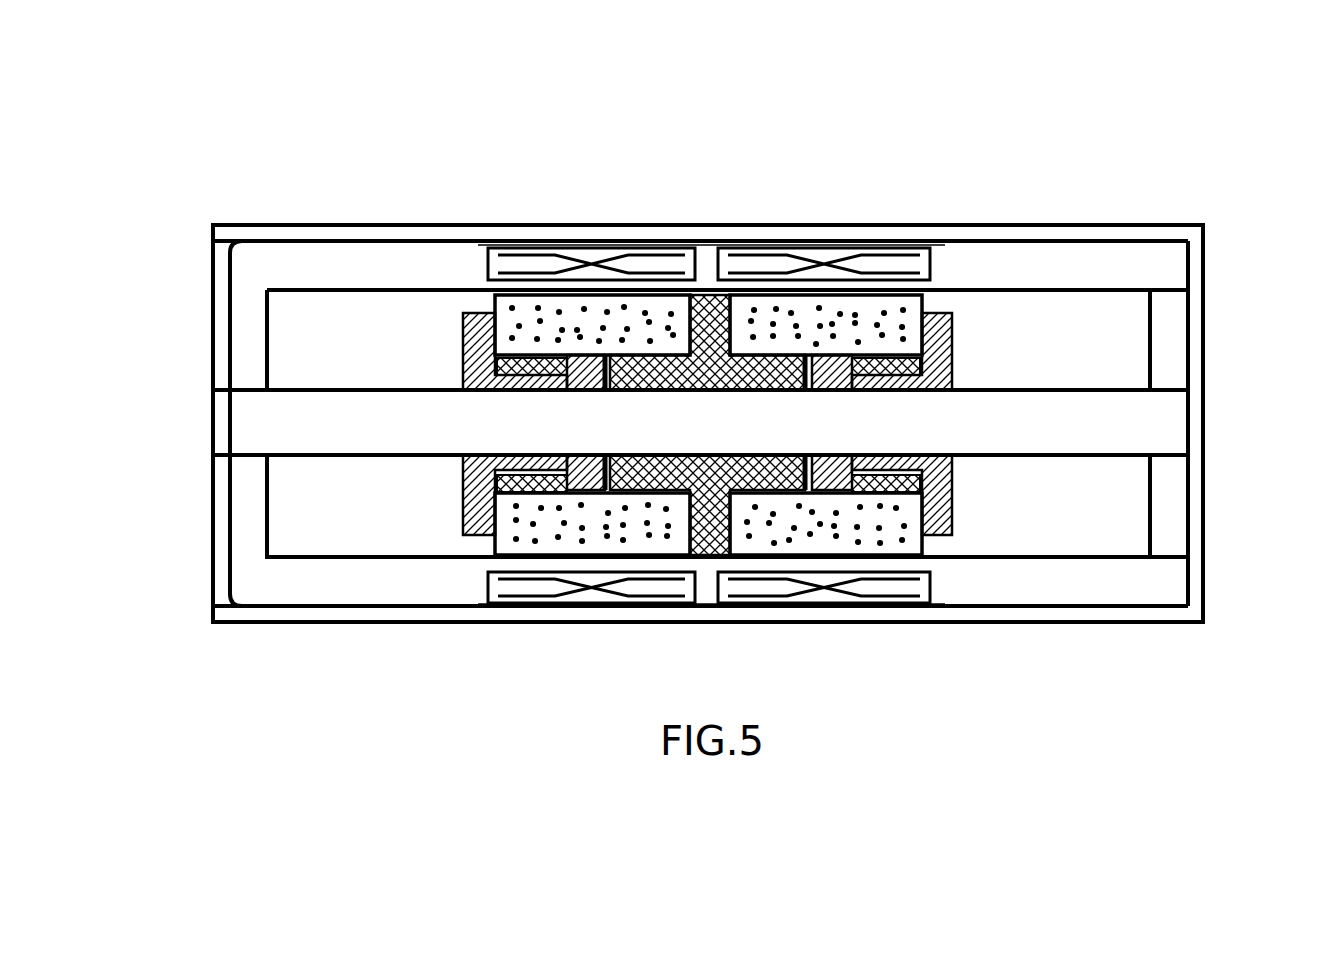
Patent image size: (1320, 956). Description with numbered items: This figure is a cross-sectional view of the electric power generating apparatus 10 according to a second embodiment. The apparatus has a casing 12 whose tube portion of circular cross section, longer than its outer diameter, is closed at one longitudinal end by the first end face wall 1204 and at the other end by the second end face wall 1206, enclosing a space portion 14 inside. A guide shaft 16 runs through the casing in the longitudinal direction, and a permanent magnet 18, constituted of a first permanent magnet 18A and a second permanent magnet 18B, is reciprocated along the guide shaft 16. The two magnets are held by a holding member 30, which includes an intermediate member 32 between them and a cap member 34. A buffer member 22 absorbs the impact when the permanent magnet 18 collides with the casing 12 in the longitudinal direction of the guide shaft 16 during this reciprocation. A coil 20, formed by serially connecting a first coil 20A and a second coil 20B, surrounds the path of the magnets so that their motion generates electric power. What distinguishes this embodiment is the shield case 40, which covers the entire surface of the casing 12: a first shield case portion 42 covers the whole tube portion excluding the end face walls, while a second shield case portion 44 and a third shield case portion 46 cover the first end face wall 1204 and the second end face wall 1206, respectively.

The electric power generating apparatus 10 is at (968, 110).
The casing 12 is at (714, 386).
The space portion 14 is at (1077, 532).
The guide shaft 16 is at (310, 458).
The permanent magnet 18 is at (741, 352).
The first permanent magnet 18A is at (493, 300).
The second permanent magnet 18B is at (924, 296).
The coil 20 is at (711, 355).
The first coil 20A is at (600, 247).
The second coil 20B is at (833, 247).
The buffer member 22 is at (462, 352).
The holding member 30 is at (445, 522).
The intermediate member 32 is at (710, 540).
The cap member 34 is at (785, 320).
The shield case 40 is at (707, 351).
The first shield case portion 42 is at (400, 240).
The second shield case portion 44 is at (212, 313).
The third shield case portion 46 is at (1205, 292).
The first end face wall 1204 is at (255, 352).
The second end face wall 1206 is at (1175, 347).